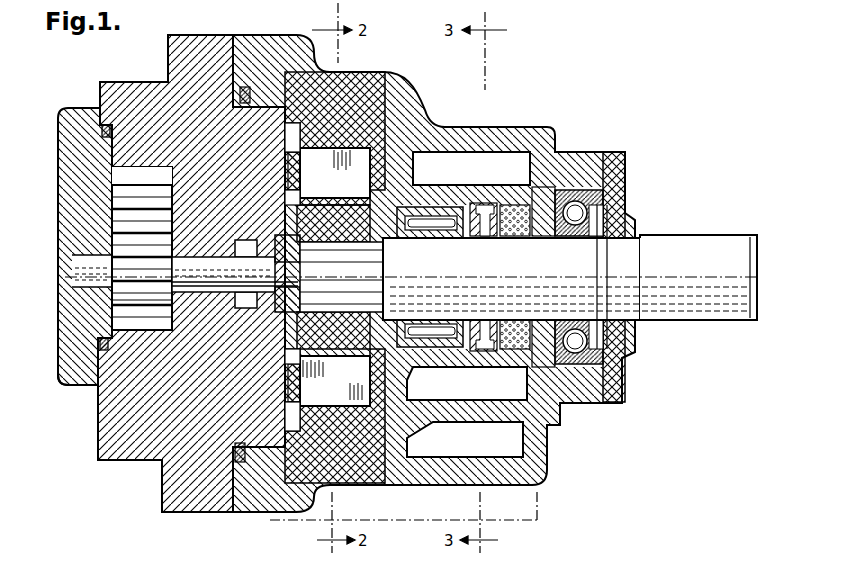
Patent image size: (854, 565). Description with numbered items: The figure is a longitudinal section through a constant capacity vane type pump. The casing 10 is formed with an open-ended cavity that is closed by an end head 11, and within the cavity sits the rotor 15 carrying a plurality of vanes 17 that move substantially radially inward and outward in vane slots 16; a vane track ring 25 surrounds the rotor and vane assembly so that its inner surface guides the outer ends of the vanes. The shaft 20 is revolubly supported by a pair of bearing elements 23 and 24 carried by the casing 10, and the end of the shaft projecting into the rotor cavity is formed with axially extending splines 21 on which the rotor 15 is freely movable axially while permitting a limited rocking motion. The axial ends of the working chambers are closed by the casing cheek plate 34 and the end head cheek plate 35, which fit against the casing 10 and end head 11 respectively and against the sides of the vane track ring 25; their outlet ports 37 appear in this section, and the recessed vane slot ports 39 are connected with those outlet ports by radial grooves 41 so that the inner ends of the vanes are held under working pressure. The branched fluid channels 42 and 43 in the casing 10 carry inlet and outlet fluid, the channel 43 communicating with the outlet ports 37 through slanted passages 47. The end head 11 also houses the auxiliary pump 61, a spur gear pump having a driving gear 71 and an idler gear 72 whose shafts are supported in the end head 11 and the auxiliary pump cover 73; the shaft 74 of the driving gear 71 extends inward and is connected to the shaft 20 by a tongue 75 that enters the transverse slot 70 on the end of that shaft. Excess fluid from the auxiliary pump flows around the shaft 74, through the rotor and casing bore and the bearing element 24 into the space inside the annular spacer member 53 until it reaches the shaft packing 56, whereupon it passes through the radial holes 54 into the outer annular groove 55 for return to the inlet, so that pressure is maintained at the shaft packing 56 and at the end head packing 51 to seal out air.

The casing 10 is at (385, 74).
The end head 11 is at (215, 35).
The rotor 15 is at (353, 198).
The vane slots 16 is at (350, 355).
The vanes 17 is at (335, 277).
The shaft 20 is at (707, 238).
The splines 21 is at (385, 302).
The bearing element 23 is at (594, 238).
The bearing element 24 is at (450, 240).
The vane track ring 25 is at (356, 113).
The casing cheek plate 34 is at (415, 96).
The end head cheek plate 35 is at (282, 121).
The outlet ports 37 is at (288, 143).
The vane slot ports 39 is at (285, 196).
The radial grooves 41 is at (280, 184).
The fluid channel 42 is at (507, 455).
The fluid channel 43 is at (532, 158).
The slanted passages 47 is at (413, 150).
The end head packing 51 is at (234, 455).
The annular spacer member 53 is at (500, 238).
The radial holes 54 is at (487, 238).
The outer annular groove 55 is at (509, 186).
The shaft packing 56 is at (536, 320).
The auxiliary pump 61 is at (80, 102).
The transverse slot 70 is at (303, 281).
The driving gear 71 is at (122, 313).
The idler gear 72 is at (120, 202).
The auxiliary pump cover 73 is at (80, 378).
The shaft 74 is at (207, 262).
The tongue 75 is at (276, 278).